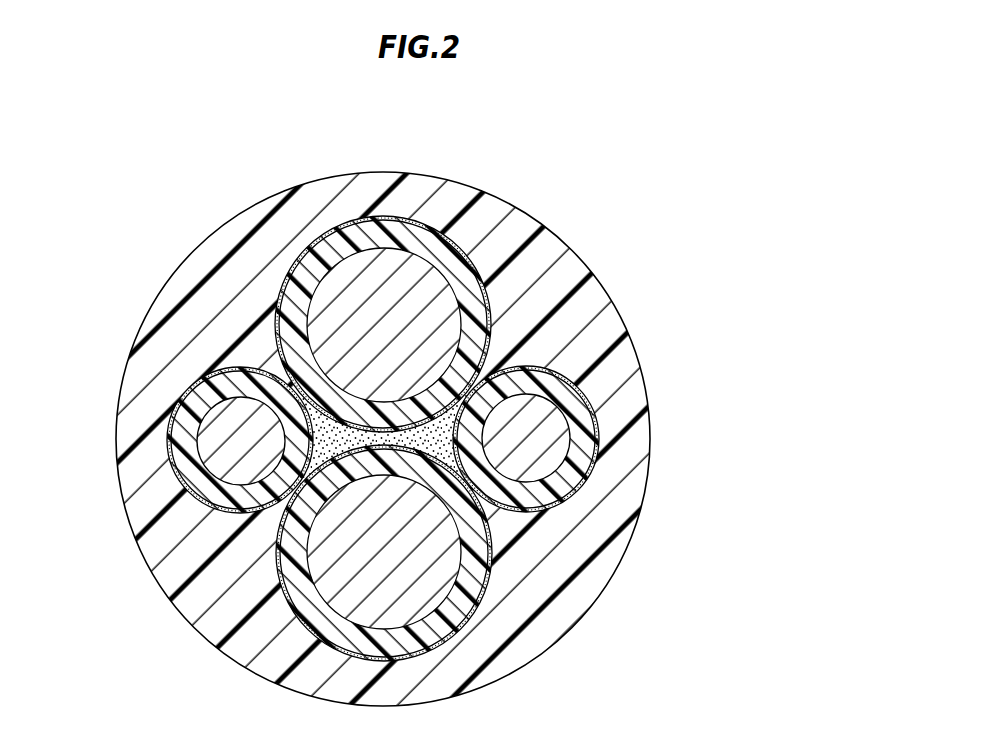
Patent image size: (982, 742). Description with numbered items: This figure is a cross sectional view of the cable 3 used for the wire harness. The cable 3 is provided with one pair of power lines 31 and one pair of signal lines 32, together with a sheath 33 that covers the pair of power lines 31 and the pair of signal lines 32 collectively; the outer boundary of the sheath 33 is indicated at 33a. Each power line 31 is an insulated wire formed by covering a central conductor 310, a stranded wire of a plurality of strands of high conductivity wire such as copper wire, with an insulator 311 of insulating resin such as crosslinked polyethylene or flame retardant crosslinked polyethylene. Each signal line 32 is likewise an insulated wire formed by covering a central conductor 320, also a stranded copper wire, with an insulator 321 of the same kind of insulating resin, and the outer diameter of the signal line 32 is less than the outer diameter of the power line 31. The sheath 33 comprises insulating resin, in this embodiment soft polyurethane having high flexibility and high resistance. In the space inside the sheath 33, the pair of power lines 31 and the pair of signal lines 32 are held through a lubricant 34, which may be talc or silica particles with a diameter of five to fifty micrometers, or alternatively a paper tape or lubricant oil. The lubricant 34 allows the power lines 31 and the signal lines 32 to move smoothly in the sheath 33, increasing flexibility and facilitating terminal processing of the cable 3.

The cable 3 is at (164, 159).
The power line 31 is at (532, 403).
The central conductor 310 is at (427, 277).
The insulator 311 is at (463, 278).
The signal line 32 is at (529, 412).
The central conductor 320 is at (538, 425).
The insulator 321 is at (570, 403).
The sheath 33 is at (435, 439).
The outer surface of sheath 33a is at (538, 658).
The lubricant 34 is at (305, 433).